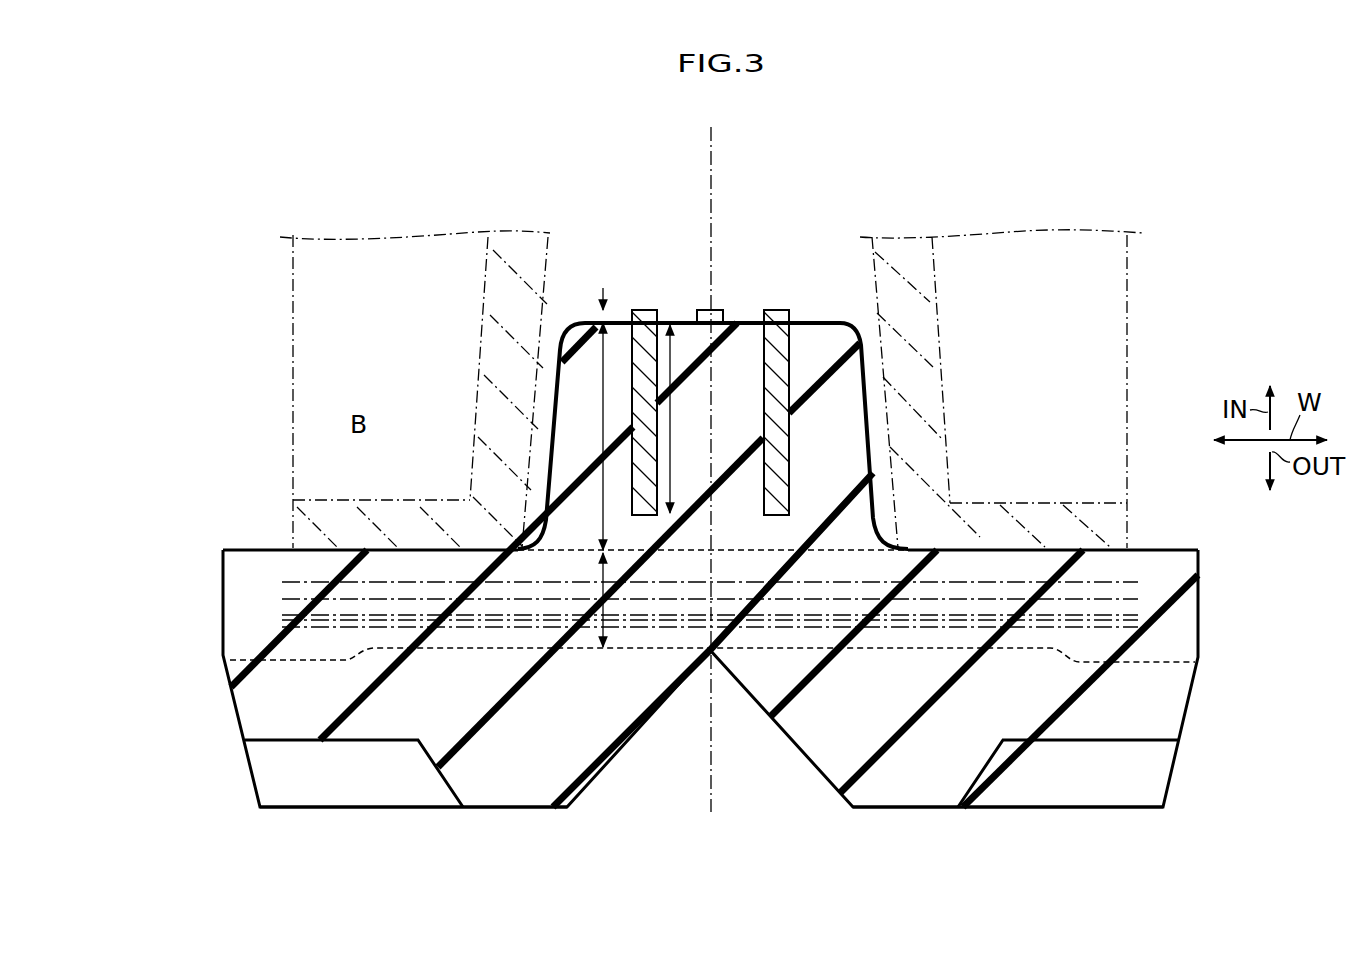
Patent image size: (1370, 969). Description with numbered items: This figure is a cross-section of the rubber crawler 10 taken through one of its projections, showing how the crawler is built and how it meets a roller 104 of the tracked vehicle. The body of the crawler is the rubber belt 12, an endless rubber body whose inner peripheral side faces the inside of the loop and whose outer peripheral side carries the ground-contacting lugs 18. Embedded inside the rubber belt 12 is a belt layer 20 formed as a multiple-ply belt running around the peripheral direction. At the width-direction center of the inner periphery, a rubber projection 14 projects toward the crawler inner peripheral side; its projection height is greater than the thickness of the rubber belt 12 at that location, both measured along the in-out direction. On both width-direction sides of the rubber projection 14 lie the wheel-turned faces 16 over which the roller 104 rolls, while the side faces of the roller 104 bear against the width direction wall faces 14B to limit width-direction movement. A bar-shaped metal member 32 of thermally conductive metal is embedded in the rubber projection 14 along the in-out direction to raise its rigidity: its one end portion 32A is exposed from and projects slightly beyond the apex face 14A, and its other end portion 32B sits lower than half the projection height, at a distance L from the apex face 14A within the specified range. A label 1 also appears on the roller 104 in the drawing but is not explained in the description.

The rubber crawler 10 is at (150, 498).
The rubber belt 12 is at (222, 570).
The rubber projections 14 is at (845, 320).
The apex face 14A is at (683, 323).
The width direction wall faces 14B is at (560, 390).
The wheel-turned faces 16 is at (446, 548).
The lugs 18 is at (503, 810).
The belt layer 20 is at (275, 577).
The metal members 32 is at (641, 308).
The one end portion 32A is at (770, 308).
The other end portion 32B is at (775, 520).
The rollers 104 is at (1132, 278).
The mold cavity 1 is at (313, 424).